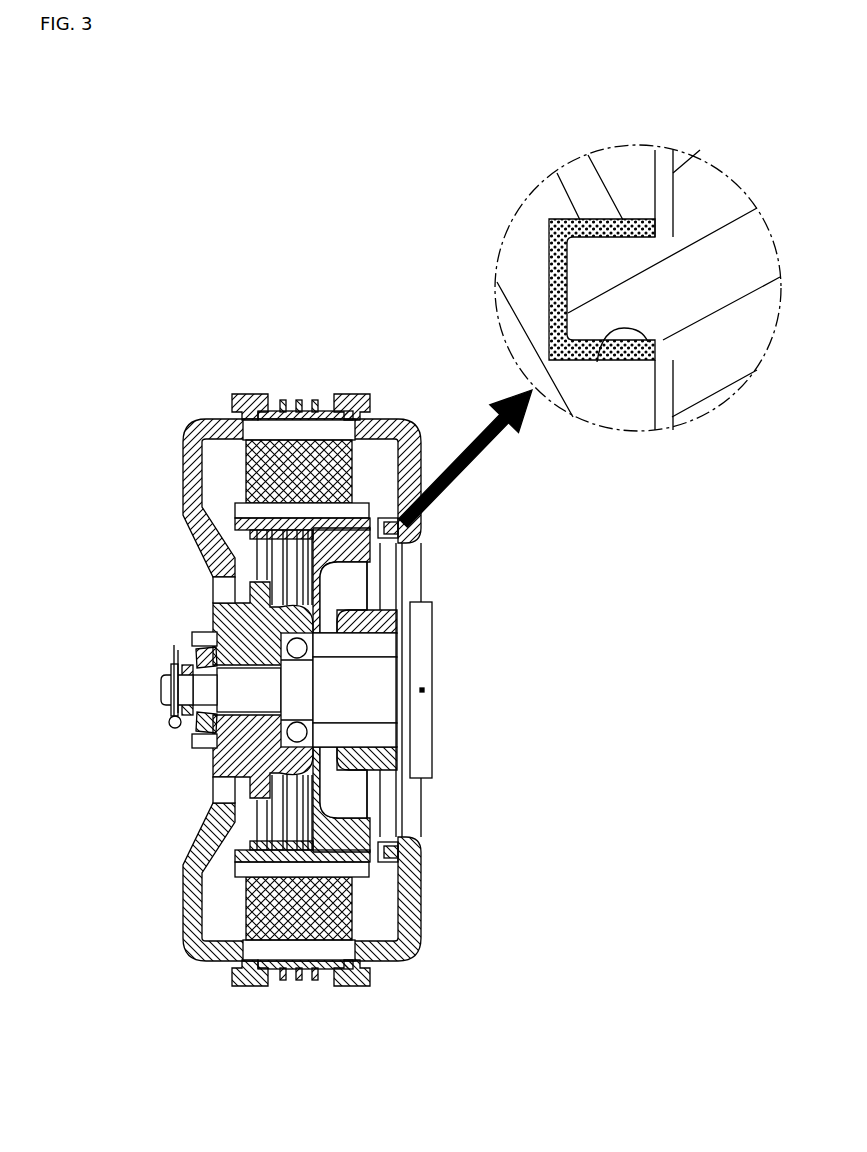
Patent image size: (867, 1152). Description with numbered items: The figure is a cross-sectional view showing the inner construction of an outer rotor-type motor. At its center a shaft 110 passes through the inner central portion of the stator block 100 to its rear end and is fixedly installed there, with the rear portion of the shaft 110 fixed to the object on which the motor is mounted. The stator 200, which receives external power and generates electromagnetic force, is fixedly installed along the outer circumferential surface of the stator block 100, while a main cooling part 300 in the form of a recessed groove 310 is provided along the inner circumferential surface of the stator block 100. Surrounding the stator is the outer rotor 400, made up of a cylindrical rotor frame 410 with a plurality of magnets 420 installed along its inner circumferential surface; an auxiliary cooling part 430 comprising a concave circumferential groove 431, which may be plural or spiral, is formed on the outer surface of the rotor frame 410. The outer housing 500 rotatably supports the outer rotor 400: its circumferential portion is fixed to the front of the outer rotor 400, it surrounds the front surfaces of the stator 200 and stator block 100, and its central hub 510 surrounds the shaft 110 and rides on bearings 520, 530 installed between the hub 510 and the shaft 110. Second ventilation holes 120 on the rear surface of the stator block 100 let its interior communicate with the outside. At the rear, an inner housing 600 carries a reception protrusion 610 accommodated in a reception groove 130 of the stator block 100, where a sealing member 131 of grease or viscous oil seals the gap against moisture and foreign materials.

The stator block 100 is at (393, 628).
The shaft 110 is at (228, 742).
The second ventilation holes 120 is at (355, 598).
The reception groove 130 is at (598, 362).
The sealing member 131 is at (557, 257).
The stator 200 is at (238, 445).
The main cooling part 300 is at (246, 568).
The groove 310 is at (262, 548).
The outer rotor 400 is at (345, 600).
The rotor frame 410 is at (256, 375).
The magnets 420 is at (360, 392).
The auxiliary cooling part 430 is at (324, 385).
The groove 431 is at (306, 621).
The outer housing 500 is at (172, 456).
The hub 510 is at (228, 790).
The bearing 520 is at (168, 722).
The bearing 530 is at (320, 745).
The inner housing 600 is at (310, 600).
The reception protrusion 610 is at (643, 258).